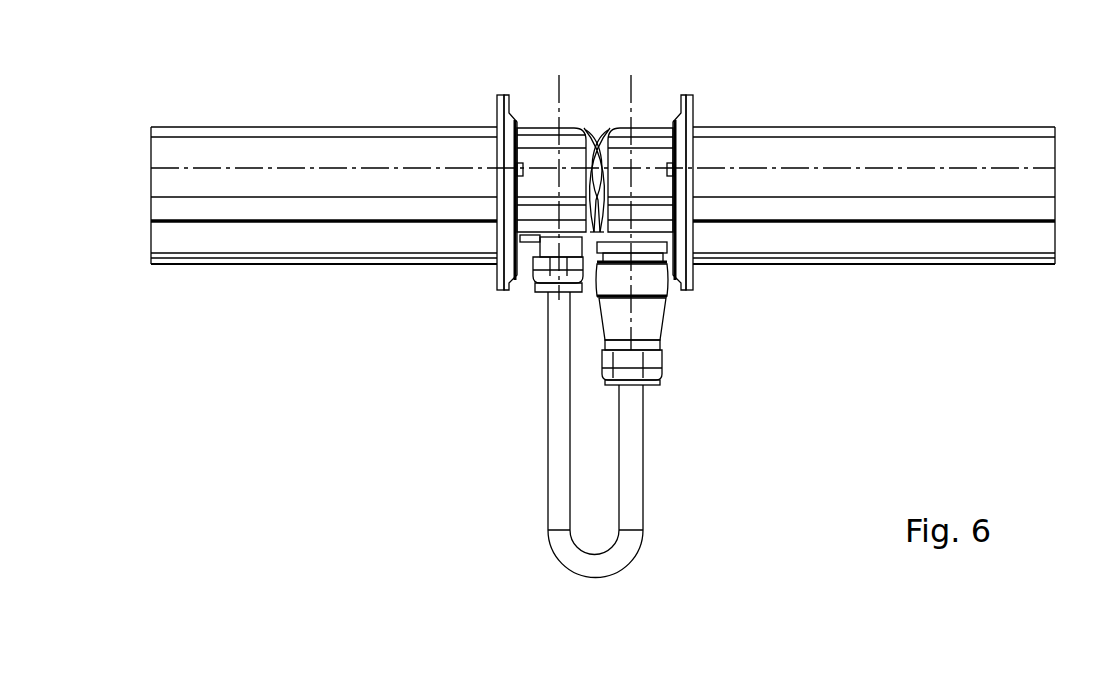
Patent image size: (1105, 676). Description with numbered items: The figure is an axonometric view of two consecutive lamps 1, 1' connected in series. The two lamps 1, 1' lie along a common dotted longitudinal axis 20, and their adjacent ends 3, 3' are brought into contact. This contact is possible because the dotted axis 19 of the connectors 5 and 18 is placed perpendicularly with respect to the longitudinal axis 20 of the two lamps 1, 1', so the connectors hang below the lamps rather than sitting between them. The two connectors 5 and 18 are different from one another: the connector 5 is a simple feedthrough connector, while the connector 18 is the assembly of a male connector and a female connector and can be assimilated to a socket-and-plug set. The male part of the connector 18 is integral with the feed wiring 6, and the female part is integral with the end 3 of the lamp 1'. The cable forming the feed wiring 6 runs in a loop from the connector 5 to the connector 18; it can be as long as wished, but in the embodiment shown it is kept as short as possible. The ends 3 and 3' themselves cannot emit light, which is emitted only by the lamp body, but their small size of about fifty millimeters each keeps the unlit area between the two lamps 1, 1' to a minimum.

The lamp 1 is at (324, 232).
The lamp 1' is at (874, 232).
The end 3 is at (472, 222).
The end 3' is at (729, 223).
The connector 5 is at (543, 290).
The feed wiring 6 is at (560, 450).
The connector 18 is at (638, 300).
The axis 19 is at (558, 80).
The longitudinal axis 20 is at (352, 167).